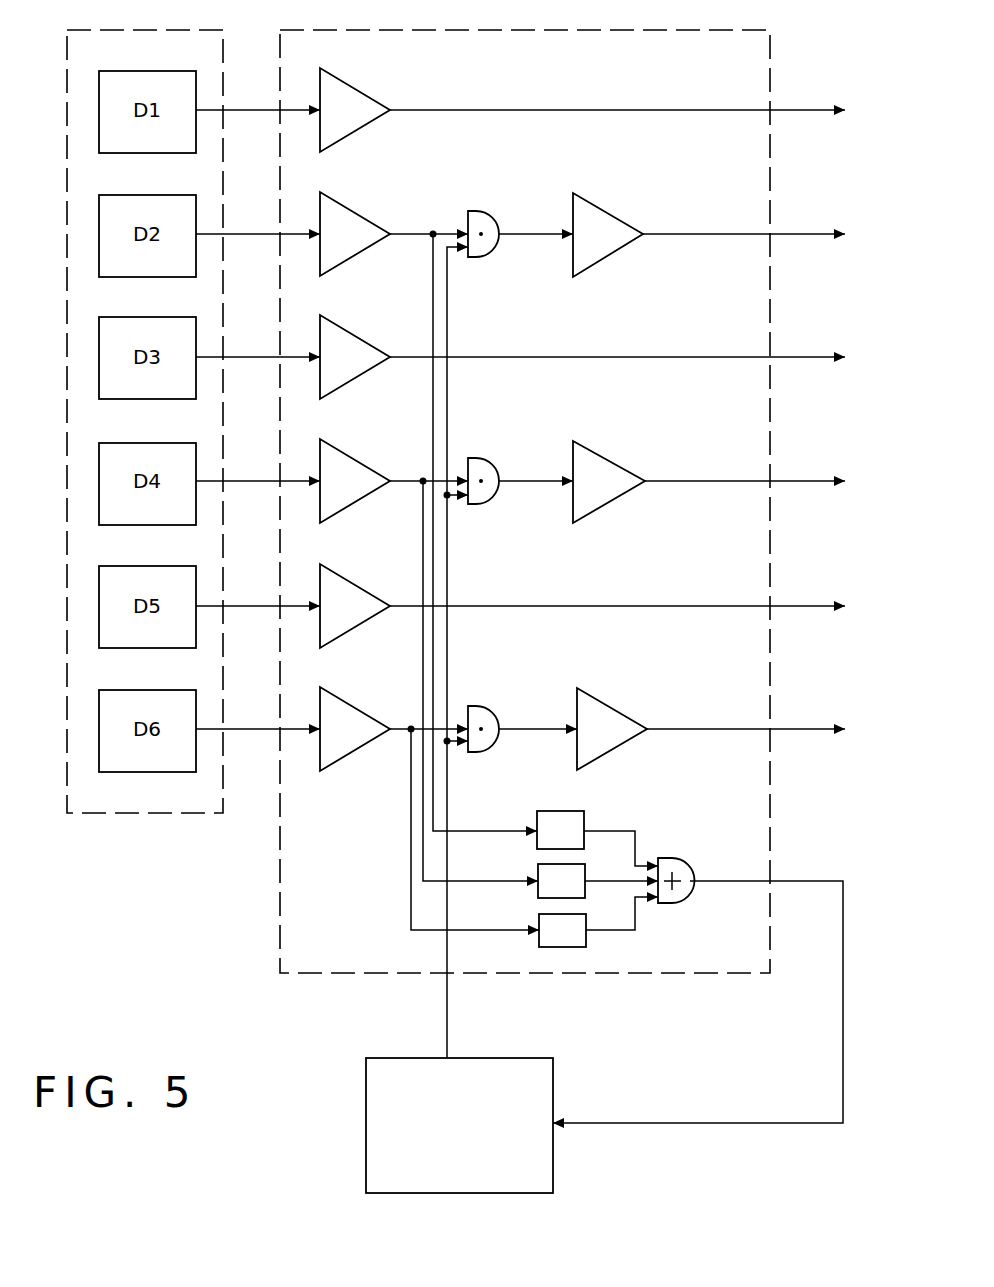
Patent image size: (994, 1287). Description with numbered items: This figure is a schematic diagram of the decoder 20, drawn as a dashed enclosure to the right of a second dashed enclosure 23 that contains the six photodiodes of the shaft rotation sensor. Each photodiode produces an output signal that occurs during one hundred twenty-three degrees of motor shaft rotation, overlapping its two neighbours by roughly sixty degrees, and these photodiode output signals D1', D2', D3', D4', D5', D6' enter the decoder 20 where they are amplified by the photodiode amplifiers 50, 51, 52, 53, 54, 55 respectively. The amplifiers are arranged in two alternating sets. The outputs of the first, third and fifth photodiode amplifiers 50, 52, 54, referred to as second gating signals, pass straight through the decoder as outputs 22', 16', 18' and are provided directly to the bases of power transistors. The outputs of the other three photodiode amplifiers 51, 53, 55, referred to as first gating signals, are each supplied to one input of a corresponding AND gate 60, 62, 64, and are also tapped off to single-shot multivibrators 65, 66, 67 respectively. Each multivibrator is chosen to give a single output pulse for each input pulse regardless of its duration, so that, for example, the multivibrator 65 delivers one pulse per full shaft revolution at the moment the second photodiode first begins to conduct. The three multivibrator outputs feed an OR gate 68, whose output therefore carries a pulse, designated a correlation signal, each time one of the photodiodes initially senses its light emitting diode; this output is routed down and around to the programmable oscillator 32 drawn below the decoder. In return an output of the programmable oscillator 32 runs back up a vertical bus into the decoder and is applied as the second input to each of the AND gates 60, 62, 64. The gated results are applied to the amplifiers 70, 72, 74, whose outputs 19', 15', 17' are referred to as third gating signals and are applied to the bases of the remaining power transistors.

The shaft rotation sensor 23 is at (135, 30).
The decoder 20 is at (540, 30).
The photodiode amplifier 50 is at (358, 91).
The photodiode amplifier 51 is at (358, 215).
The photodiode amplifier 52 is at (358, 338).
The photodiode amplifier 53 is at (358, 462).
The photodiode amplifier 54 is at (358, 587).
The photodiode amplifier 55 is at (358, 710).
The AND gate 60 is at (492, 211).
The AND gate 62 is at (492, 458).
The AND gate 64 is at (492, 706).
The amplifier 70 is at (611, 215).
The amplifier 72 is at (611, 462).
The amplifier 74 is at (615, 710).
The single-shot multivibrator 65 is at (570, 811).
The single-shot multivibrator 66 is at (592, 852).
The single-shot multivibrator 67 is at (593, 900).
The OR gate 68 is at (680, 858).
The programmable oscillator 32 is at (553, 1169).
The output of photodiode amplifier 50 22' is at (636, 111).
The output of amplifier 70 19' is at (763, 235).
The output of photodiode amplifier 52 16' is at (636, 358).
The output of amplifier 72 15' is at (764, 482).
The output of photodiode amplifier 54 18' is at (636, 607).
The output of amplifier 74 17' is at (765, 730).
The photodiode output signal D1' is at (258, 94).
The photodiode output signal D2' is at (258, 218).
The photodiode output signal D3' is at (258, 341).
The photodiode output signal D4' is at (258, 465).
The photodiode output signal D5' is at (258, 590).
The photodiode output signal D6' is at (258, 713).